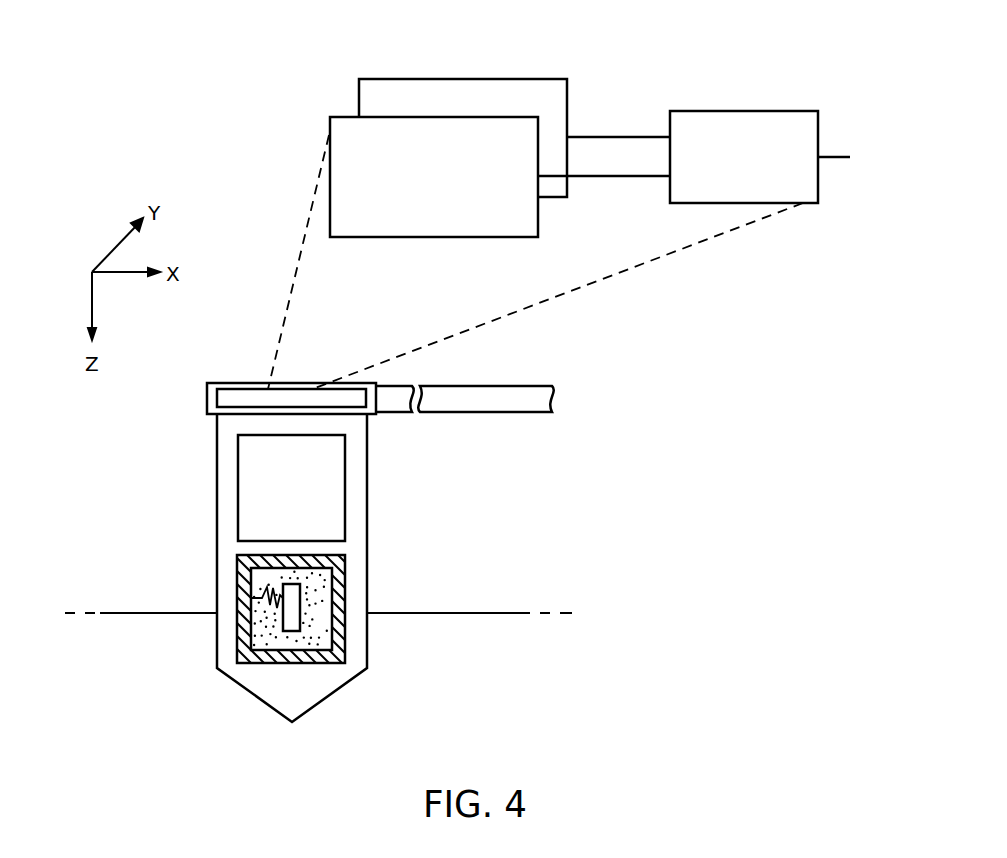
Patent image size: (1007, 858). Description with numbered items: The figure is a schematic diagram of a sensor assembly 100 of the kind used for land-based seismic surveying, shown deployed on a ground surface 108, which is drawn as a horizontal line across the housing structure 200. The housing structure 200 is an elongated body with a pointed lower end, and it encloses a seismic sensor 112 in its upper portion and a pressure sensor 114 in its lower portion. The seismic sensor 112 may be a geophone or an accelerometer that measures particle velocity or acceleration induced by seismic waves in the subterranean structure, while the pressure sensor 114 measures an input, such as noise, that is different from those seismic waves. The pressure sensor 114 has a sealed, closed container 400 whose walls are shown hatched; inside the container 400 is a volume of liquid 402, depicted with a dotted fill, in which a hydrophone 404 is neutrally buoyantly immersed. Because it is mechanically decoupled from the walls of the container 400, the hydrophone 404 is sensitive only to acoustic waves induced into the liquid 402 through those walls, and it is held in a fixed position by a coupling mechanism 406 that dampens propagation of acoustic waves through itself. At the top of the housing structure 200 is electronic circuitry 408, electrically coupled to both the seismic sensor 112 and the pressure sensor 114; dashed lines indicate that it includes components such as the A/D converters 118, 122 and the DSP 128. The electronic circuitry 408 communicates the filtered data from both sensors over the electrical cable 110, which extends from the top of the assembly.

The sensor assembly 100 is at (336, 530).
The ground surface 108 is at (447, 613).
The electrical cable 110 is at (485, 386).
The seismic sensor 112 is at (328, 485).
The pressure sensor 114 is at (347, 627).
The A/D converter 118 is at (435, 117).
The A/D converter 122 is at (547, 79).
The DSP 128 is at (744, 111).
The housing structure 200 is at (228, 606).
The closed container 400 is at (337, 580).
The liquid 402 is at (308, 645).
The hydrophone 404 is at (290, 631).
The coupling mechanism 406 is at (262, 593).
The electronic circuitry 408 is at (292, 388).